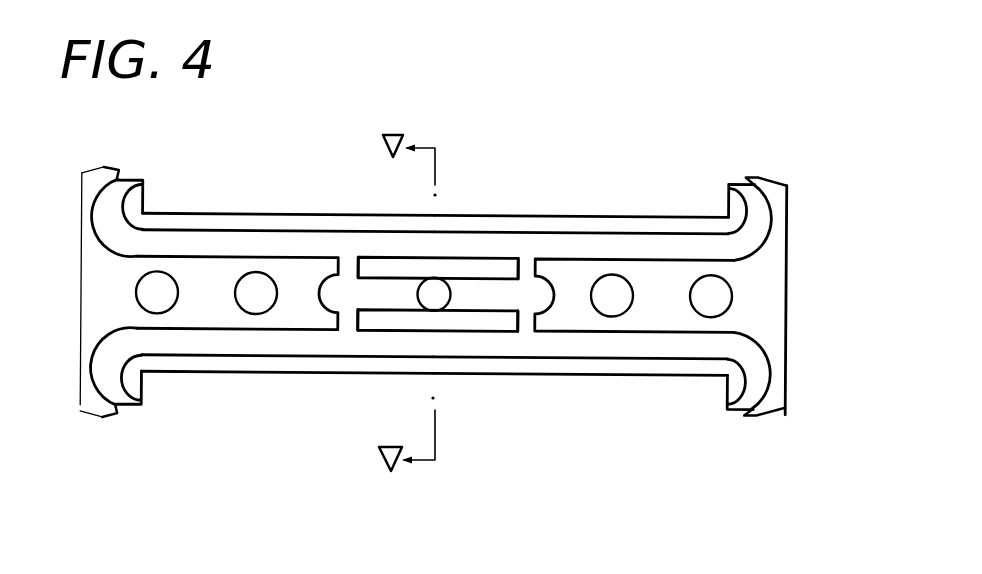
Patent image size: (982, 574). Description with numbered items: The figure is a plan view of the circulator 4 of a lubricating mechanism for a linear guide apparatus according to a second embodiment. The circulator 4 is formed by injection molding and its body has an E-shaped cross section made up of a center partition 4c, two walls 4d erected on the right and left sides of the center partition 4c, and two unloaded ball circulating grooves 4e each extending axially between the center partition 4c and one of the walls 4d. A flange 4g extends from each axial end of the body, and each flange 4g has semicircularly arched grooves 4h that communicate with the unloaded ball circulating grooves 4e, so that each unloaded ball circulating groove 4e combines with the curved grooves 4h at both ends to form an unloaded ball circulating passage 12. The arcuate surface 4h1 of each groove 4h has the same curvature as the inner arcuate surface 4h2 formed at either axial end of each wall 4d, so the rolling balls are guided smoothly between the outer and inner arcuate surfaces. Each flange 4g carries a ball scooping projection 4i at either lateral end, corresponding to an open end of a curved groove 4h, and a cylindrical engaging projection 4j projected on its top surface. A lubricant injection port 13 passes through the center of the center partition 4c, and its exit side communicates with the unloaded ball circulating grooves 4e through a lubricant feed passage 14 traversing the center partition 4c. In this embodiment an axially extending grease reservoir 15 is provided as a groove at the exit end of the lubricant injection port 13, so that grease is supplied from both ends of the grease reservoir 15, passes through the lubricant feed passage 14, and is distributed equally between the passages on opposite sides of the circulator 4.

The circulator 4 is at (686, 200).
The center partition 4c is at (658, 312).
The wall 4d is at (250, 212).
The unloaded ball circulating groove 4e is at (615, 243).
The flange 4g is at (82, 186).
The semicircularly arched groove 4h is at (740, 387).
The arcuate surface 4h1 is at (767, 372).
The inner arcuate surface 4h2 is at (778, 415).
The ball scooping projection 4i is at (117, 170).
The cylindrical engaging projection 4j is at (147, 298).
The unloaded ball circulating passage 12 is at (750, 347).
The lubricant injection port 13 is at (432, 302).
The lubricant feed passage 14 is at (348, 264).
The grease reservoir 15 is at (490, 300).